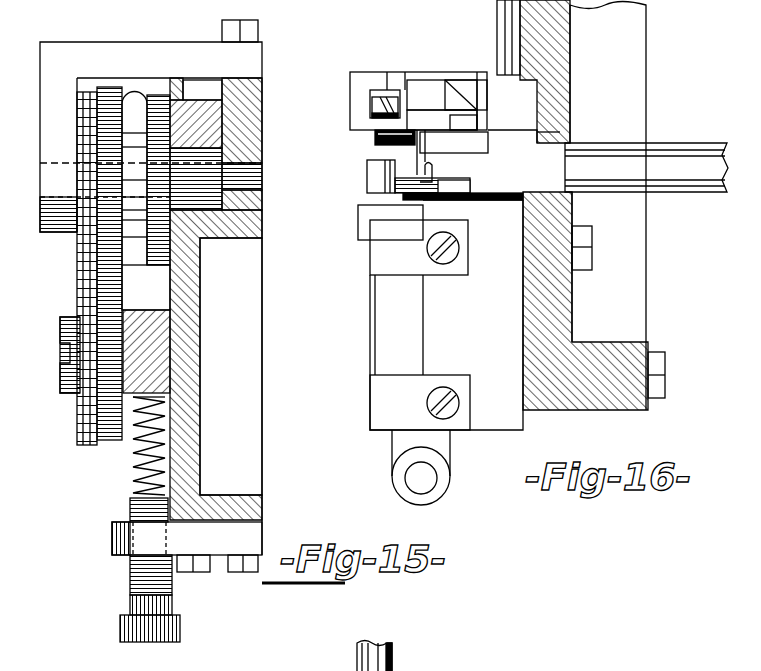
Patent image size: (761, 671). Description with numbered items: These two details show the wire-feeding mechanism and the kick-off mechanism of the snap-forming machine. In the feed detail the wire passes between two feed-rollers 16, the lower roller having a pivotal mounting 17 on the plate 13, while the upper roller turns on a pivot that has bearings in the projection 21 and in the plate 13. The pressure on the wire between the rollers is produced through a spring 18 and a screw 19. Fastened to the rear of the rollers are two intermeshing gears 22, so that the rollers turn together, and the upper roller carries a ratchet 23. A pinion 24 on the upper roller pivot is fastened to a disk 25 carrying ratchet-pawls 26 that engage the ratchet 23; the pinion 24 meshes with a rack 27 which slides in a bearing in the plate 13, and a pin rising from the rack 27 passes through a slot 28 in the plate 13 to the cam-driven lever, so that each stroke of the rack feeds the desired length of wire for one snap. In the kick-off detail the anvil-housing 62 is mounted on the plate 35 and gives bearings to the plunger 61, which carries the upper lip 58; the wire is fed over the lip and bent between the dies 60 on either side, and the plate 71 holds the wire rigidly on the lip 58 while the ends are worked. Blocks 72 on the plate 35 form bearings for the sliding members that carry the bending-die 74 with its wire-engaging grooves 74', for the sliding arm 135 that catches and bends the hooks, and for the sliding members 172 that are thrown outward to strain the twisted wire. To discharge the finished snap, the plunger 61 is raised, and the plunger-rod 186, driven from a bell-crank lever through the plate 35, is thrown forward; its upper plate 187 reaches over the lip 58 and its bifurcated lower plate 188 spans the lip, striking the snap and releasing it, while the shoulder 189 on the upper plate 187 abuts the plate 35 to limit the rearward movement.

In FIG. 15, the plate 13 is at (190, 376).
In FIG. 15, the feed-rollers 16 is at (77, 113).
In FIG. 15, the pivotal mounting 17 is at (150, 343).
In FIG. 15, the spring 18 is at (135, 478).
In FIG. 15, the screw 19 is at (135, 592).
In FIG. 15, the projection 21 is at (151, 298).
In FIG. 15, the intermeshing gears 22 is at (108, 92).
In FIG. 15, the ratchet 23 is at (130, 178).
In FIG. 15, the pinion 24 is at (210, 238).
In FIG. 15, the disk 25 is at (156, 100).
In FIG. 15, the ratchet-pawls 26 is at (48, 247).
In FIG. 15, the rack 27 is at (195, 125).
In FIG. 15, the slot 28 is at (216, 120).
In FIG. 16, the plate 35 is at (581, 205).
In FIG. 16, the upper lip 58 is at (395, 198).
In FIG. 16, the dies 60 is at (370, 170).
In FIG. 16, the plunger 61 is at (440, 448).
In FIG. 16, the anvil-housing 62 is at (446, 315).
In FIG. 16, the plate 71 is at (375, 213).
In FIG. 16, the blocks 72 is at (434, 78).
In FIG. 16, the bending-die 74 is at (452, 152).
In FIG. 16, the grooves 74' is at (450, 170).
In FIG. 16, the sliding arm 135 is at (376, 105).
In FIG. 16, the sliding members 172 is at (375, 140).
In FIG. 16, the plunger-rod 186 is at (392, 668).
In FIG. 16, the upper plate 187 is at (472, 165).
In FIG. 16, the lower plate 188 is at (418, 205).
In FIG. 16, the shoulder 189 is at (540, 140).